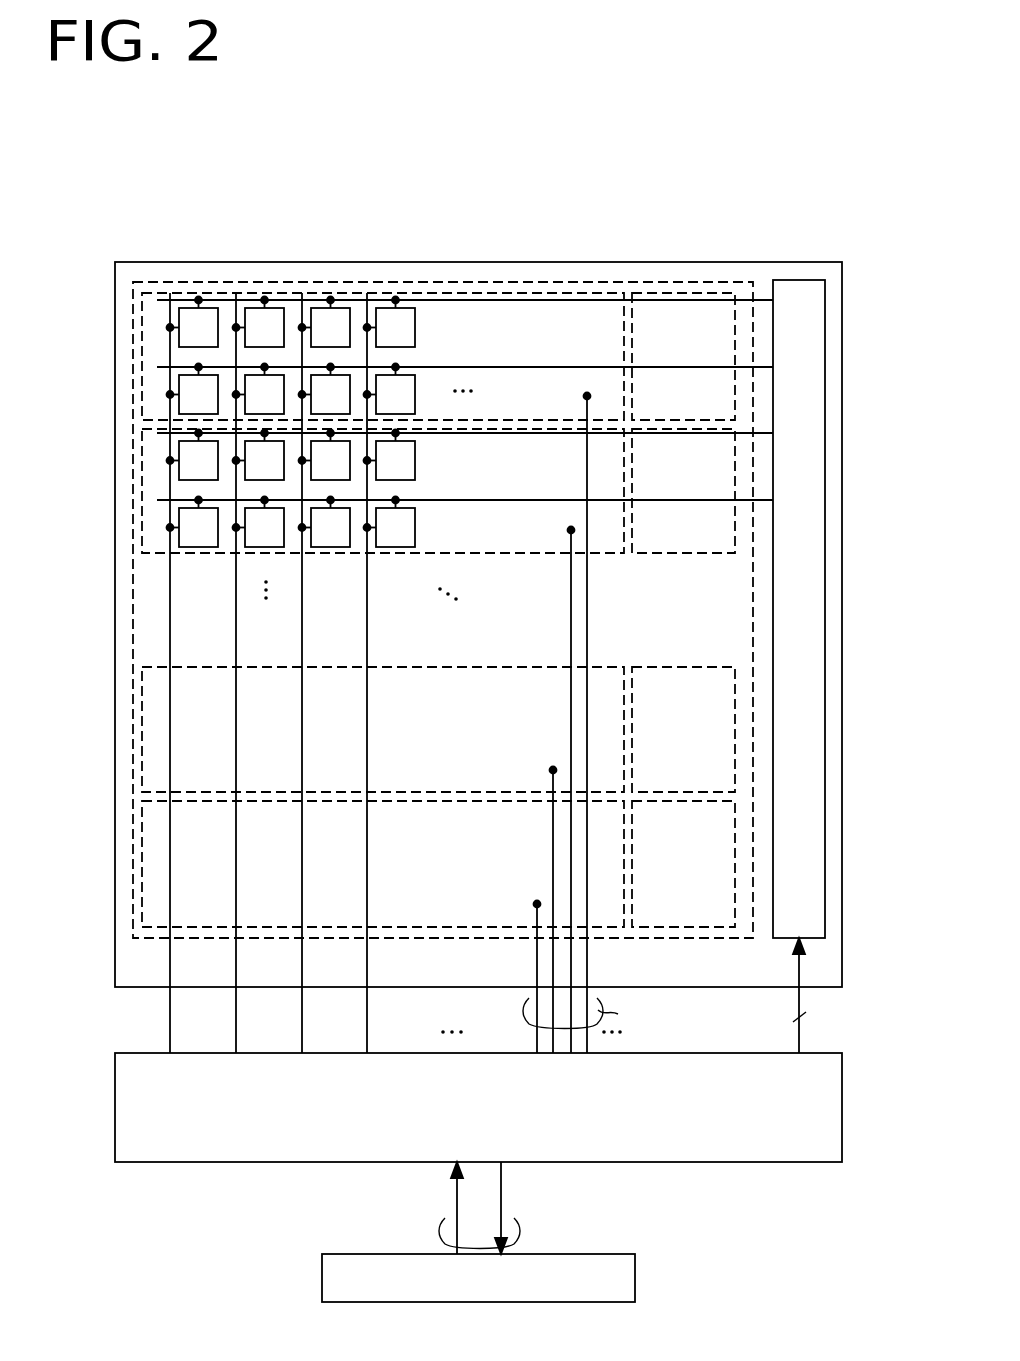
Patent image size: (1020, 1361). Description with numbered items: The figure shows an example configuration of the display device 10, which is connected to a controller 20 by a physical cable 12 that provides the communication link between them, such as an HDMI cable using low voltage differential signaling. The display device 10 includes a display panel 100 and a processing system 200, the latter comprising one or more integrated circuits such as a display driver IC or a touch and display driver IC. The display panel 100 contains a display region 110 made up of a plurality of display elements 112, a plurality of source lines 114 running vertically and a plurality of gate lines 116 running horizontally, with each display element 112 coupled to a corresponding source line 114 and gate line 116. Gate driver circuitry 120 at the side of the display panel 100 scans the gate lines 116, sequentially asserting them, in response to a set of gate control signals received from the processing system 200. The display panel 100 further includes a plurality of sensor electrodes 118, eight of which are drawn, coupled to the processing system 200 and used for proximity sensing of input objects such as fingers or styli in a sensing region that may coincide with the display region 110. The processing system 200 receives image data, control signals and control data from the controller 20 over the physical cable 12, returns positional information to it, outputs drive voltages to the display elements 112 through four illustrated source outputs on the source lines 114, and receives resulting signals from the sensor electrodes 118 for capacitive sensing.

The display device 10 is at (802, 210).
The physical cable 12 is at (515, 1230).
The controller 20 is at (466, 1287).
The display panel 100 is at (575, 262).
The display region 110 is at (665, 281).
The display element 112 is at (183, 339).
The source line 114 is at (172, 600).
The gate line 116 is at (680, 301).
The sensor electrode 118 is at (481, 335).
The gate driver circuitry 120 is at (782, 349).
The processing system 200 is at (460, 1131).